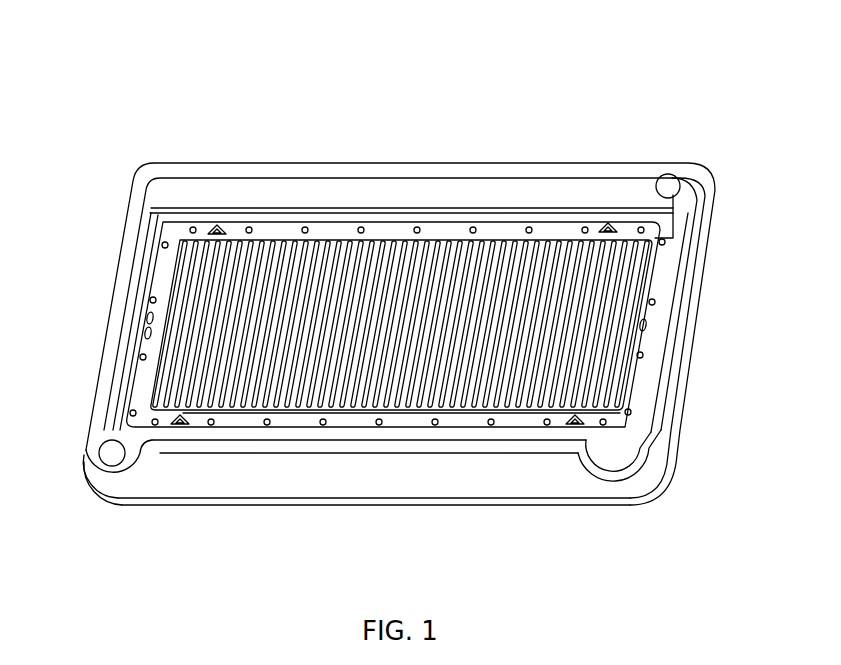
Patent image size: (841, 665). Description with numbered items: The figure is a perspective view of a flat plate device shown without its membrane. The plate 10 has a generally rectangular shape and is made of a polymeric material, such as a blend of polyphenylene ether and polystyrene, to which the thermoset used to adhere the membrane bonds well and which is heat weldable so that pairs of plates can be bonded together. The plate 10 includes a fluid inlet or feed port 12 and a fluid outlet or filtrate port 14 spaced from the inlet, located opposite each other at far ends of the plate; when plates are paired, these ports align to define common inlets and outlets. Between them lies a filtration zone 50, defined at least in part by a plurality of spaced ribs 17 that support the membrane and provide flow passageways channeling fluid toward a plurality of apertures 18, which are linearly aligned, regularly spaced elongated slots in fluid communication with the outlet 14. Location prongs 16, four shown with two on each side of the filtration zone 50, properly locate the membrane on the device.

The plate 10 is at (647, 62).
The fluid inlet or feed port 12 is at (672, 181).
The fluid outlet or filtrate port 14 is at (110, 452).
The location prong 16 is at (216, 226).
The spaced ribs 17 is at (310, 247).
The apertures 18 is at (292, 403).
The filtration zone 50 is at (655, 238).